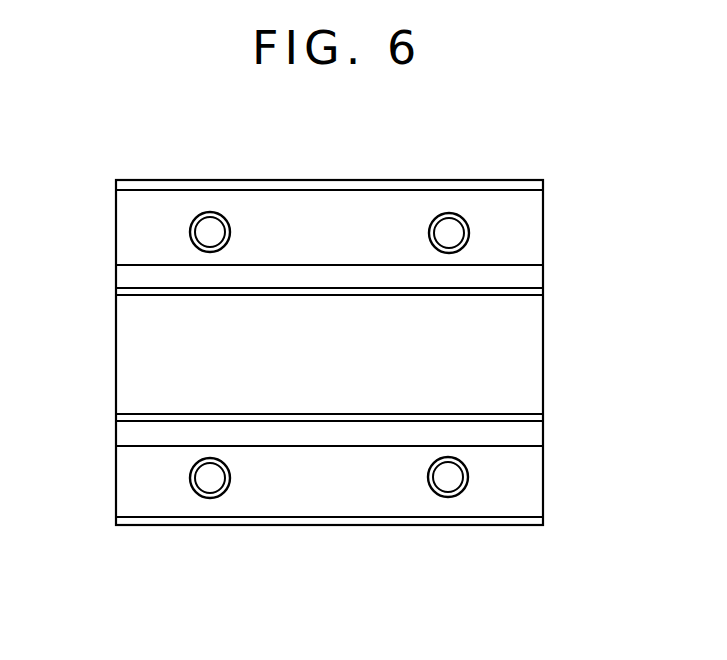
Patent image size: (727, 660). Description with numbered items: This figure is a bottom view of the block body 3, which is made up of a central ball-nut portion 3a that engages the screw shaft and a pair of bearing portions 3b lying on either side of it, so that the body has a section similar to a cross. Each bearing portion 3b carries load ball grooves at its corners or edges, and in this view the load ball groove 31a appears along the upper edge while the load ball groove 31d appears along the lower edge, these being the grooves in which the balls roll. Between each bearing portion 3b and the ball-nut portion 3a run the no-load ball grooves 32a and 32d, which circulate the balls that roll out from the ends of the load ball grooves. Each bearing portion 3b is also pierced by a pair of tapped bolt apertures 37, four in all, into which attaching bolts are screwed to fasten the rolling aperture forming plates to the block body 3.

The block body 3 is at (112, 238).
The ball-nut portion 3a is at (523, 358).
The bearing portion 3b is at (523, 223).
The load ball groove 31a is at (287, 190).
The load ball groove 31d is at (352, 525).
The no-load ball groove 32a is at (523, 278).
The no-load ball groove 32d is at (523, 438).
The tapped bolt aperture 37 is at (217, 226).